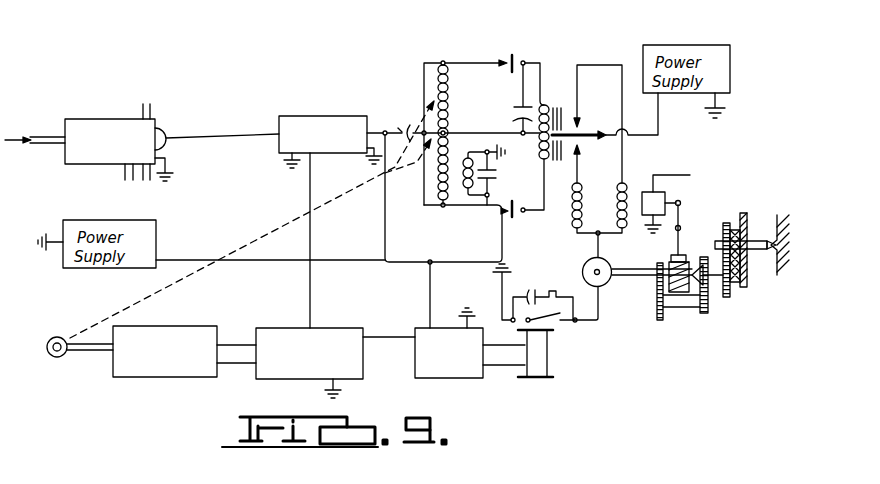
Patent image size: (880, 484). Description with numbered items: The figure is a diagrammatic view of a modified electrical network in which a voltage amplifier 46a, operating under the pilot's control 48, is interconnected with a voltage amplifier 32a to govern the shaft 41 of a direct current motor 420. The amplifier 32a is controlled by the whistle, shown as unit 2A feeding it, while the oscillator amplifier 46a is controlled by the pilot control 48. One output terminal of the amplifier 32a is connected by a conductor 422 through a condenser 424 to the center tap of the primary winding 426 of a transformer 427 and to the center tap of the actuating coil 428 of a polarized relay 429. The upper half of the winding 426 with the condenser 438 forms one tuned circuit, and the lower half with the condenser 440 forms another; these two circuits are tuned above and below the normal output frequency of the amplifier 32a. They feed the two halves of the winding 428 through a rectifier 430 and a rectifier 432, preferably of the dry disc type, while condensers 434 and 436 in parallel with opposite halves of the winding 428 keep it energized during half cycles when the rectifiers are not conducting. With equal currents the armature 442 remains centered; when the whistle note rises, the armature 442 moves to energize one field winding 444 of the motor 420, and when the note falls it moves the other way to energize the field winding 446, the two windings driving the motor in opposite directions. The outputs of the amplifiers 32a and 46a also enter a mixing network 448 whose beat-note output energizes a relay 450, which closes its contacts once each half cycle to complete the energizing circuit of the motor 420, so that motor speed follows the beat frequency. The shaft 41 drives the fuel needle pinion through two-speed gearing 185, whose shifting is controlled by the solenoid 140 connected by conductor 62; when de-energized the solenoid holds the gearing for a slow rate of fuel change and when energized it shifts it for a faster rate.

The photoelectric detector unit 2A is at (102, 122).
The voltage amplifier 32a is at (300, 120).
The condenser 438 is at (411, 125).
The condenser 424 is at (402, 137).
The conductor 422 is at (377, 126).
The condenser 440 is at (252, 219).
The primary winding 426 is at (450, 110).
The rectifier 430 is at (519, 41).
The condenser 434 is at (513, 100).
The transformer 427 is at (470, 210).
The condenser 436 is at (483, 180).
The rectifier 432 is at (514, 217).
The actuating coil 428 is at (545, 104).
The polarized relay 429 is at (560, 172).
The armature 442 is at (604, 134).
The field winding 446 is at (580, 177).
The field winding 444 is at (622, 178).
The conductor 62 is at (690, 175).
The solenoid 140 is at (667, 196).
The two-speed gearing 185 is at (695, 250).
The direct current motor 420 is at (607, 268).
The shaft 41 is at (637, 278).
The pilot's control 48 is at (152, 334).
The voltage amplifier 46a is at (323, 335).
The mixing network 448 is at (462, 378).
The relay 450 is at (533, 379).